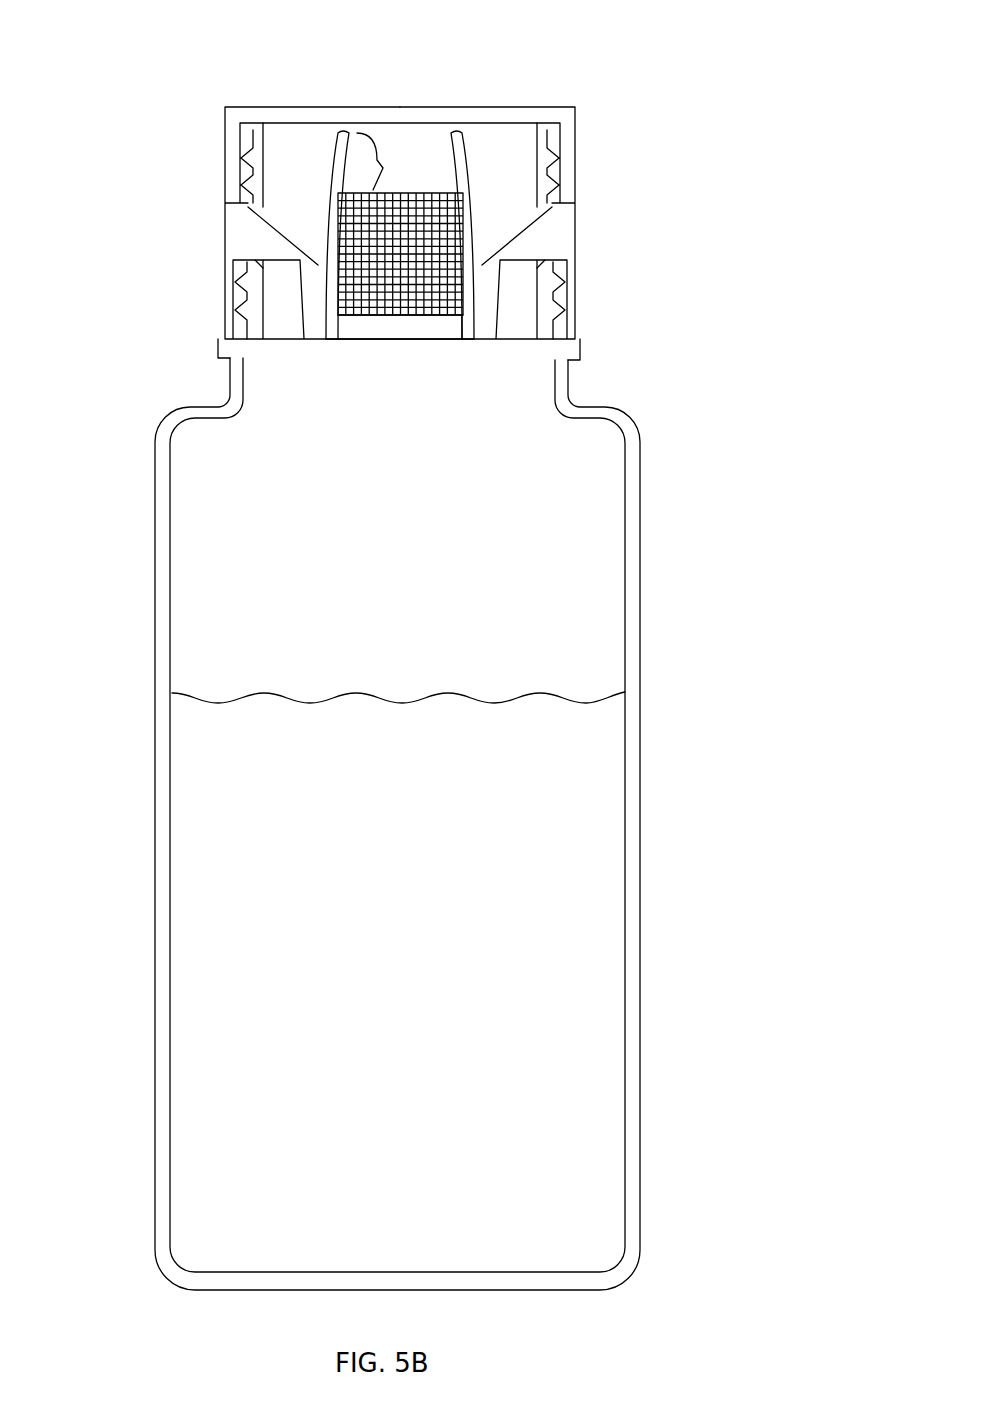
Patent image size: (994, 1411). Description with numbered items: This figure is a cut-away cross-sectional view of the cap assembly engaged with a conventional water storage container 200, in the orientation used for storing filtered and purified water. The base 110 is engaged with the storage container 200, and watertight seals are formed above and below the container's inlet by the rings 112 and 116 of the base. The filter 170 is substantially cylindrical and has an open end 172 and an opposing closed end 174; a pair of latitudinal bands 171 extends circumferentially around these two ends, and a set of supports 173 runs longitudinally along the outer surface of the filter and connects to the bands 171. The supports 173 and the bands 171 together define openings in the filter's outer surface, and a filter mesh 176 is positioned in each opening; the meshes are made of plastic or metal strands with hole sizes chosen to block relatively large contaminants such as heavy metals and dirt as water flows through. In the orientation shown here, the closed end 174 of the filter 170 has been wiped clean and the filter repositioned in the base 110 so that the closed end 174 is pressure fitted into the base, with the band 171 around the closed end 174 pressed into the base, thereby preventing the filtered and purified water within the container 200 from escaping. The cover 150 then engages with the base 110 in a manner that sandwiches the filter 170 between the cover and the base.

The cover 150 is at (203, 95).
The base 110 is at (223, 252).
The ring 116 is at (237, 267).
The ring 112 is at (225, 343).
The water storage container 200 is at (158, 438).
The filter 170 is at (420, 363).
The latitudinal band 171 is at (375, 188).
The open end 172 is at (437, 130).
The support 173 is at (480, 255).
The closed end 174 is at (395, 328).
The filter mesh 176 is at (447, 325).